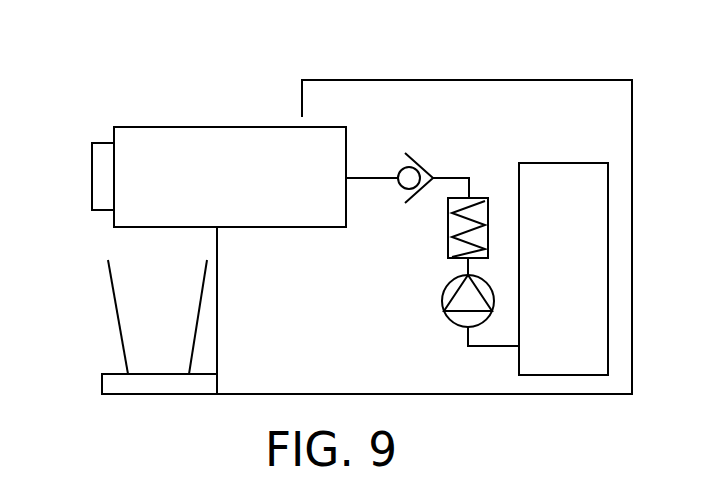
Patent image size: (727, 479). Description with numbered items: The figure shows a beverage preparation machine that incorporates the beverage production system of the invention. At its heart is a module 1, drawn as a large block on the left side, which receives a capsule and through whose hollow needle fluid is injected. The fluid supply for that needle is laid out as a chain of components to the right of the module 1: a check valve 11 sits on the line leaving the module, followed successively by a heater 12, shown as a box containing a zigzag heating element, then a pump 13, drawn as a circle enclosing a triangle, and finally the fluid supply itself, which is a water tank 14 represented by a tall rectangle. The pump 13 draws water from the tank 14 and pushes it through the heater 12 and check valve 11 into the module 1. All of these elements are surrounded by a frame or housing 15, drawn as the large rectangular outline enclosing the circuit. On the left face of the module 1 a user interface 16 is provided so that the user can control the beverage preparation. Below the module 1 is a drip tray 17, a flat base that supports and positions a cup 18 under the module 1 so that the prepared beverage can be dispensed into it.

The module 1 is at (228, 127).
The check valve 11 is at (421, 166).
The heater 12 is at (448, 228).
The pump 13 is at (444, 300).
The tank 14 is at (562, 163).
The housing 15 is at (492, 80).
The user interface 16 is at (92, 177).
The drip tray 17 is at (102, 383).
The cup 18 is at (113, 297).